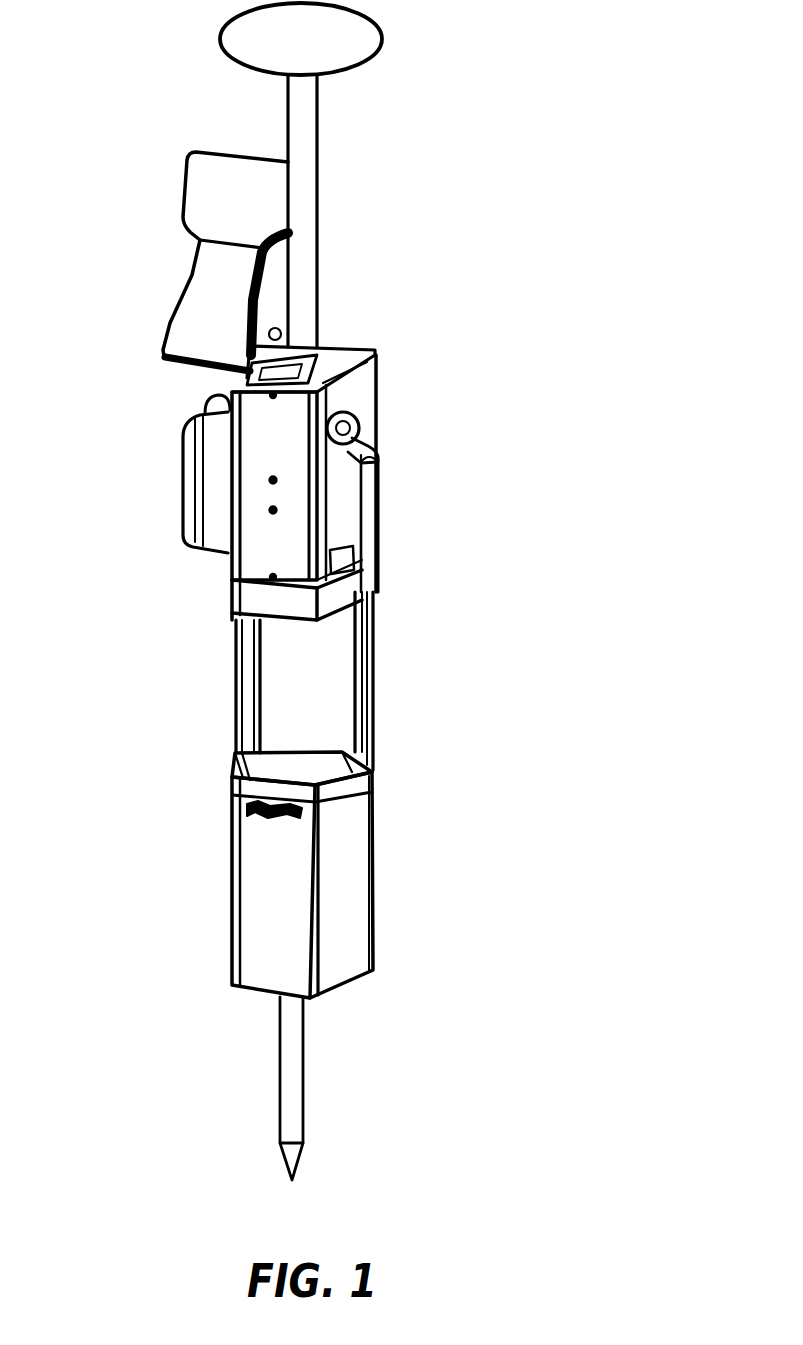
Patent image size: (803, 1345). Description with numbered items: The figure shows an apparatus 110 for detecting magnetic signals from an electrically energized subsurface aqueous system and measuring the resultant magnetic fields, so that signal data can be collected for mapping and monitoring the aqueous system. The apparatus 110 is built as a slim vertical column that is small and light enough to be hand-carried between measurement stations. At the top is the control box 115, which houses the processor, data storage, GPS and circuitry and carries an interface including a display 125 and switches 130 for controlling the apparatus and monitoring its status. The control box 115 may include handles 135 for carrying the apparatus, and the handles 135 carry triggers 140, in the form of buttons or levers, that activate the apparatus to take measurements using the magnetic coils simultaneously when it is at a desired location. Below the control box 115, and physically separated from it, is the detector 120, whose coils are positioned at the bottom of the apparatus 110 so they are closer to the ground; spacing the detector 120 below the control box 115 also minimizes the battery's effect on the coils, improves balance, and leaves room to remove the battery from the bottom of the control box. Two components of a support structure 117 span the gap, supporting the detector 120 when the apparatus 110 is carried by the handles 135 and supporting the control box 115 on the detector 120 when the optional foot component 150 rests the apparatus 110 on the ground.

The apparatus 110 is at (503, 171).
The control box 115 is at (232, 576).
The support structure 117 is at (237, 683).
The detector 120 is at (345, 915).
The display 125 is at (373, 357).
The switches 130 is at (290, 320).
The handles 135 is at (367, 488).
The triggers 140 is at (370, 395).
The foot component 150 is at (290, 1098).